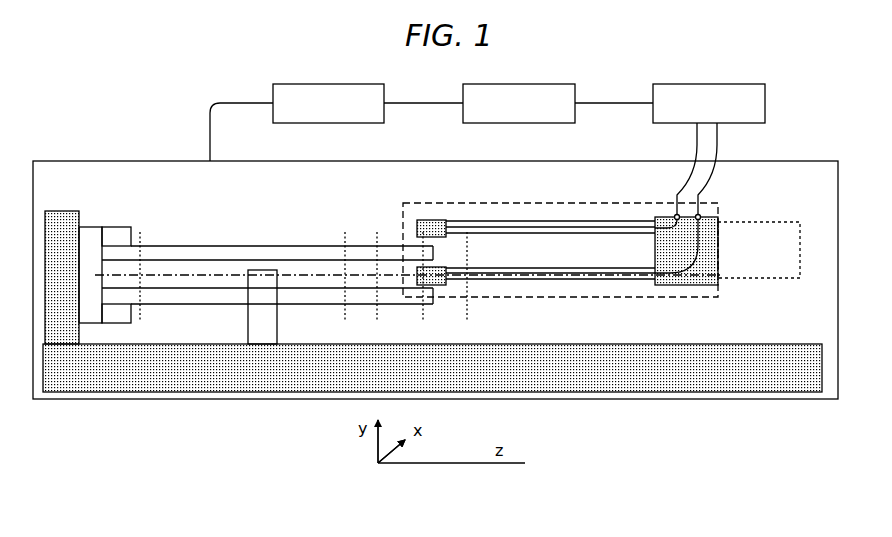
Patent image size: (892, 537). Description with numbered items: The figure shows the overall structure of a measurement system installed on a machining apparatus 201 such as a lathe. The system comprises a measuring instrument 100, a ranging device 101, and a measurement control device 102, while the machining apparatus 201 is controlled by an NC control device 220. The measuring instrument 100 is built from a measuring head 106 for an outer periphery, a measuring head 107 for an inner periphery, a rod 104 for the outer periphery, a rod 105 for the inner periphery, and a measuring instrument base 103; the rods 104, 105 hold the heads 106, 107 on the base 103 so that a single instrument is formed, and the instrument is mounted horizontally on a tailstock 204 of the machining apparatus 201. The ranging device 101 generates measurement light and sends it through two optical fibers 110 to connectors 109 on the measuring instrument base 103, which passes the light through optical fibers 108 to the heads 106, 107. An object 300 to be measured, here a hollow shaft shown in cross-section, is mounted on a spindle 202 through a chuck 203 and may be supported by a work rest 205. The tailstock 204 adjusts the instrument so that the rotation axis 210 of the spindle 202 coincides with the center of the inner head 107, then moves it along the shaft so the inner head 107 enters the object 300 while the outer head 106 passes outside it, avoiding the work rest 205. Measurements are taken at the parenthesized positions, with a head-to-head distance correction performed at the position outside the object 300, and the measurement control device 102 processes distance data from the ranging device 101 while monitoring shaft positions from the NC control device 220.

The machining apparatus 201 is at (56, 180).
The NC control device 220 is at (297, 122).
The measurement control device 102 is at (479, 103).
The ranging device 101 is at (670, 103).
The rotation axis 210 is at (163, 277).
The spindle 202 is at (88, 238).
The chuck 203 is at (125, 230).
The object to be measured 300 is at (220, 245).
The work rest 205 is at (262, 333).
The measuring instrument 100 is at (403, 212).
The measuring head for an outer periphery 106 is at (430, 220).
The measuring head for an inner periphery 107 is at (446, 284).
The rod for an outer periphery 104 is at (525, 221).
The rod for an inner periphery 105 is at (516, 280).
The optical fibers 108 is at (580, 229).
The measuring instrument base 103 is at (693, 286).
The connectors 109 is at (672, 213).
The optical fibers 110 is at (705, 217).
The tailstock 204 is at (783, 243).